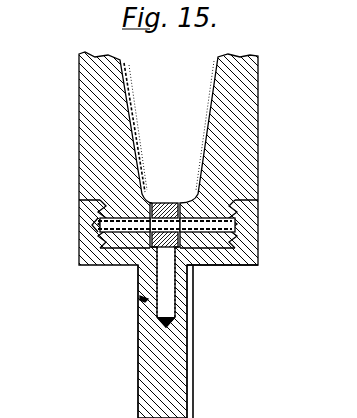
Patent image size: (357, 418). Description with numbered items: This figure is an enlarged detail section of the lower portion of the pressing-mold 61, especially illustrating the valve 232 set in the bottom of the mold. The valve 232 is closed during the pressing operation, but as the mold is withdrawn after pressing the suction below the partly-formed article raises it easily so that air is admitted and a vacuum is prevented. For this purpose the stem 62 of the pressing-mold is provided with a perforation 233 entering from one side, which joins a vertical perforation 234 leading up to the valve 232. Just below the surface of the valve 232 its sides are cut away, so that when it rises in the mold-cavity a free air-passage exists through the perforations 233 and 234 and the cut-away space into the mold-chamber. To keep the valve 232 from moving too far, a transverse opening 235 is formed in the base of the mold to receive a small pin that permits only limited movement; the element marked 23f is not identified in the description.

The pressing-mold 61 is at (80, 99).
The stem 62 is at (142, 386).
The valve 232 is at (170, 203).
The perforation 233 is at (140, 301).
The vertical perforation 234 is at (172, 297).
The transverse opening 235 is at (108, 228).
The sleeve 23f is at (240, 267).